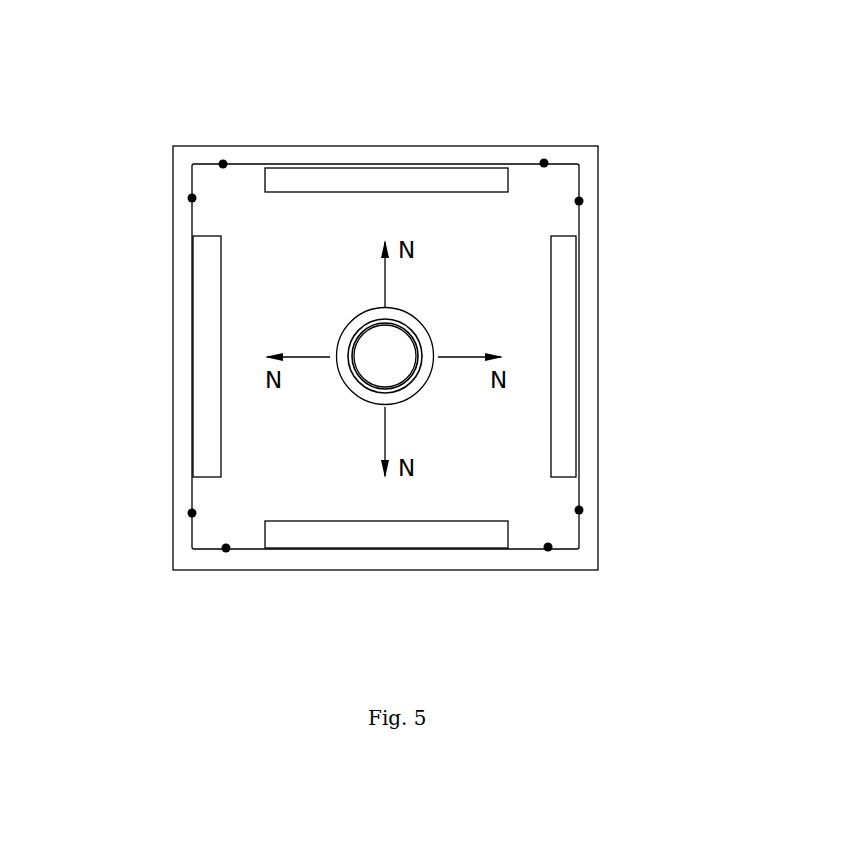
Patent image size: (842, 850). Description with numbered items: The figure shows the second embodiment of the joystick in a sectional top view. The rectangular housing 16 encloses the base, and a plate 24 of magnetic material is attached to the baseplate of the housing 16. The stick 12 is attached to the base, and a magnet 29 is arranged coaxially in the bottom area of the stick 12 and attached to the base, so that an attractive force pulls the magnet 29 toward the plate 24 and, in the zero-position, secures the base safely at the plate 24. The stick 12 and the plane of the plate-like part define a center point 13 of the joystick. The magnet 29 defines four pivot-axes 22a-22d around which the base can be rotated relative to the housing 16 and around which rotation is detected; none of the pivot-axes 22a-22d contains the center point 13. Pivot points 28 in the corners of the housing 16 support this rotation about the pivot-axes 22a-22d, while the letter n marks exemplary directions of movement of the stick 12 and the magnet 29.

The stick 12 is at (222, 299).
The center point 13 is at (216, 410).
The housing 16 is at (304, 358).
The pivot-axes 22a-22d is at (483, 358).
The plate 24 is at (385, 405).
The pivot points 28 is at (366, 340).
The magnet 29 is at (459, 477).